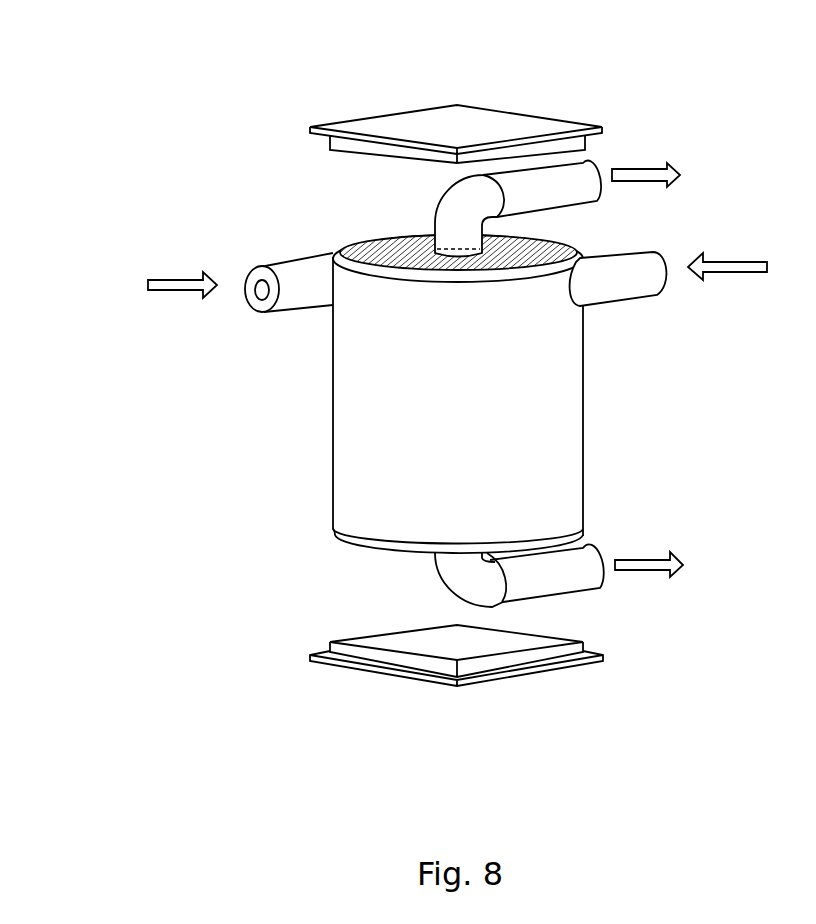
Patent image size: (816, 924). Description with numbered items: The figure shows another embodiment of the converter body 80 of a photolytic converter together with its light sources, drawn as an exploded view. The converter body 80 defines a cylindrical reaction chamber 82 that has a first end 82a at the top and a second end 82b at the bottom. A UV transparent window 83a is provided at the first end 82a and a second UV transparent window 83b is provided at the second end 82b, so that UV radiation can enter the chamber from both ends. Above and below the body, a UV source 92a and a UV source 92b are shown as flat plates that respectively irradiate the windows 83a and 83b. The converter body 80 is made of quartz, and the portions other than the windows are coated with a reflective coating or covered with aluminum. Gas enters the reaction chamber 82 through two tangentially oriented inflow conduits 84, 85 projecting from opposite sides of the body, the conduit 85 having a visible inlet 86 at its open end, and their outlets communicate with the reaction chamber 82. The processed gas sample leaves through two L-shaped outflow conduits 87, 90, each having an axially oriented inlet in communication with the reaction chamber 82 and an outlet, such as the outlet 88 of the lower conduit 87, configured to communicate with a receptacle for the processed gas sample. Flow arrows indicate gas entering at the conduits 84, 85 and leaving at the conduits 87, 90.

The converter body 80 is at (200, 227).
The reaction chamber 82 is at (583, 433).
The first end 82a is at (580, 257).
The second end 82b is at (578, 533).
The UV transparent window 83a is at (397, 250).
The UV transparent window 83b is at (347, 543).
The tangentially oriented inflow conduit 84 is at (617, 280).
The tangentially oriented inflow conduit 85 is at (310, 295).
The inlet 86 is at (257, 293).
The L-shaped outflow conduit 87 is at (552, 582).
The outlet 88 is at (602, 575).
The L-shaped outflow conduit 90 is at (557, 193).
The UV source 92a is at (413, 120).
The UV source 92b is at (415, 677).